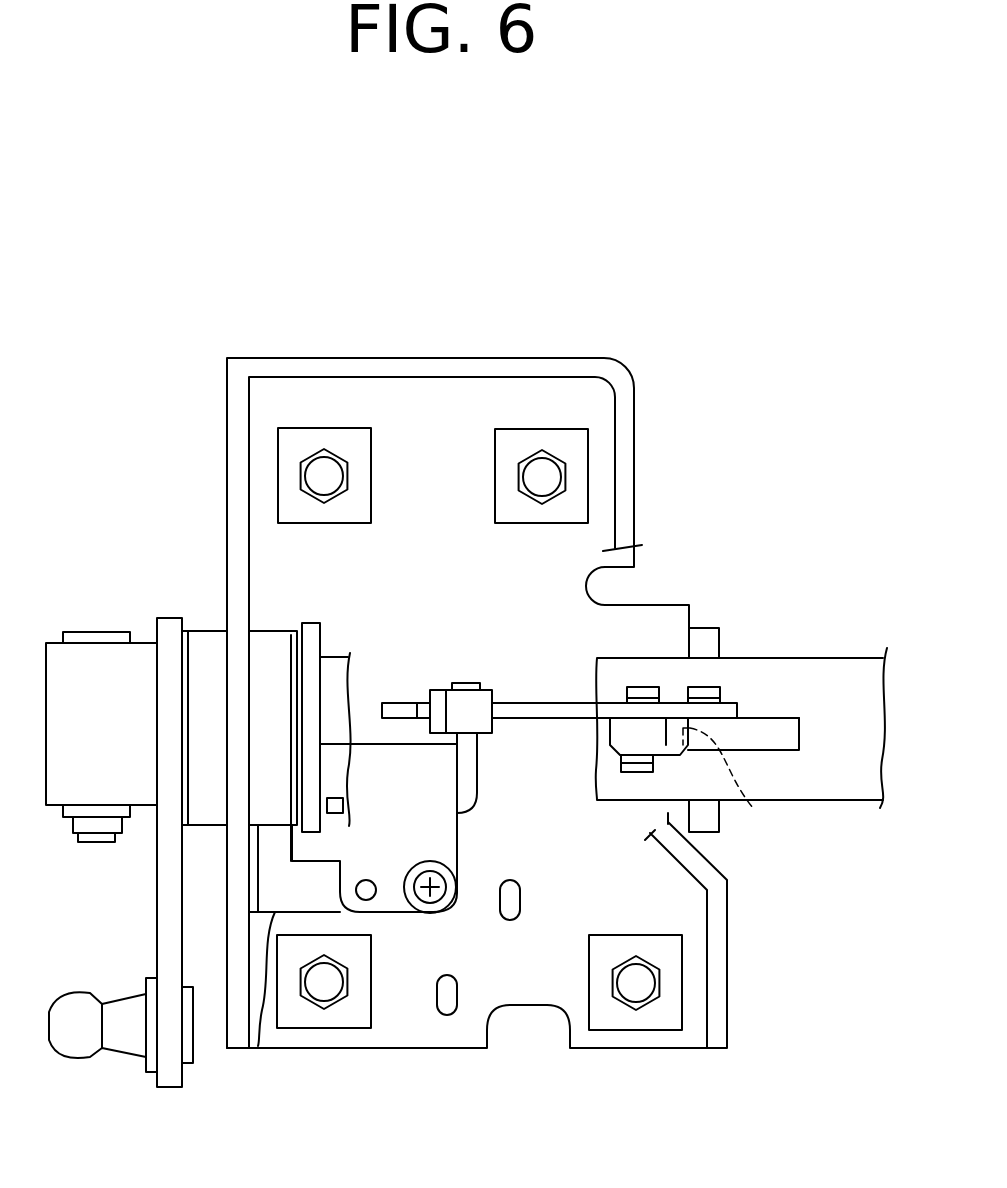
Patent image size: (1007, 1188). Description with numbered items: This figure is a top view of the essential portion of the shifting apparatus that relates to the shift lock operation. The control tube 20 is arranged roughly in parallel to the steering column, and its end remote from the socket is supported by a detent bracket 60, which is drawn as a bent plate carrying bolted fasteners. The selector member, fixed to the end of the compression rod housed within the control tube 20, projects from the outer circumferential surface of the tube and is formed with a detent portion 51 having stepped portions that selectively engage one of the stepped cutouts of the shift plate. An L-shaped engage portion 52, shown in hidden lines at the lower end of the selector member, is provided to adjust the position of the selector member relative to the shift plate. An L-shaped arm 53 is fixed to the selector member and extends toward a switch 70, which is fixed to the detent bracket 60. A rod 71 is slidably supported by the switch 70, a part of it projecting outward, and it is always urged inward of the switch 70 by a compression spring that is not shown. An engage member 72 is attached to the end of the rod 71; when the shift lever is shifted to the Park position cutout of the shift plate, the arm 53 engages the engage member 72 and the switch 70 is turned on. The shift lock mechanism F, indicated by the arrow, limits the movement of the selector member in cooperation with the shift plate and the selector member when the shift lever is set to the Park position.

The control tube 20 is at (855, 660).
The detent portion 51 is at (775, 730).
The L-shaped engage portion 52 is at (744, 788).
The L-shaped arm 53 is at (543, 712).
The detent bracket 60 is at (414, 356).
The switch 70 is at (448, 843).
The rod 71 is at (477, 760).
The engage member 72 is at (460, 698).
The shift lock mechanism F is at (400, 697).